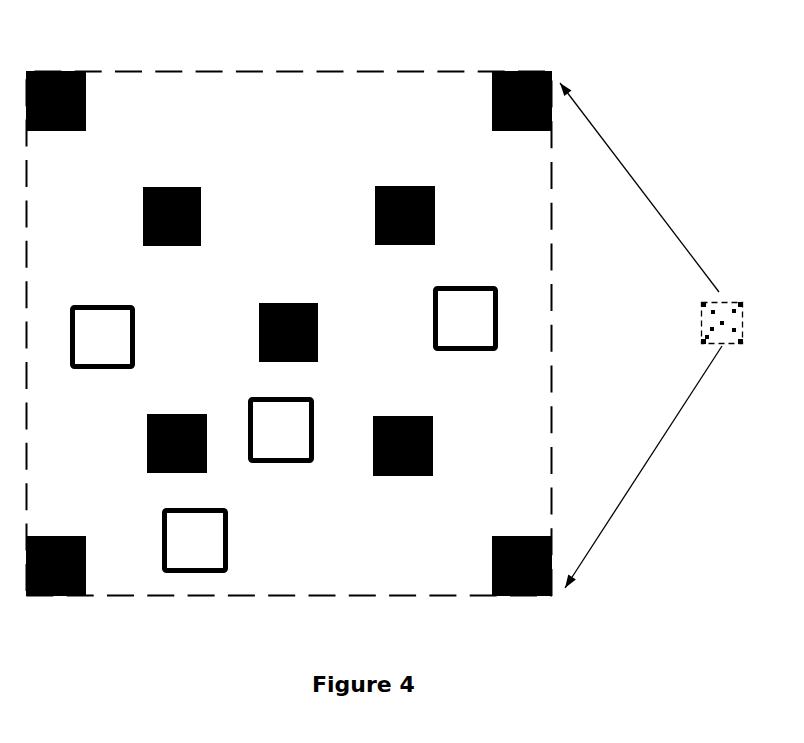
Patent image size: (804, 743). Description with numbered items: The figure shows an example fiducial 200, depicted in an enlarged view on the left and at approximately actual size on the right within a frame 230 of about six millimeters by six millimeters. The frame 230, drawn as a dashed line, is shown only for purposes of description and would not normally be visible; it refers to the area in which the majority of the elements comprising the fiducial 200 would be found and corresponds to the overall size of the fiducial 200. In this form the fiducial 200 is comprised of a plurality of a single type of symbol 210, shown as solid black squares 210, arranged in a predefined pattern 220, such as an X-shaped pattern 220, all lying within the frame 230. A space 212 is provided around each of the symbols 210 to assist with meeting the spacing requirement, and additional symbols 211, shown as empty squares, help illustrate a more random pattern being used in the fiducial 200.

The fiducial 200 is at (384, 303).
The symbol 210 is at (85, 100).
The symbol 211 is at (95, 305).
The space 212 is at (104, 174).
The predefined pattern 220 is at (269, 309).
The frame 230 is at (405, 71).